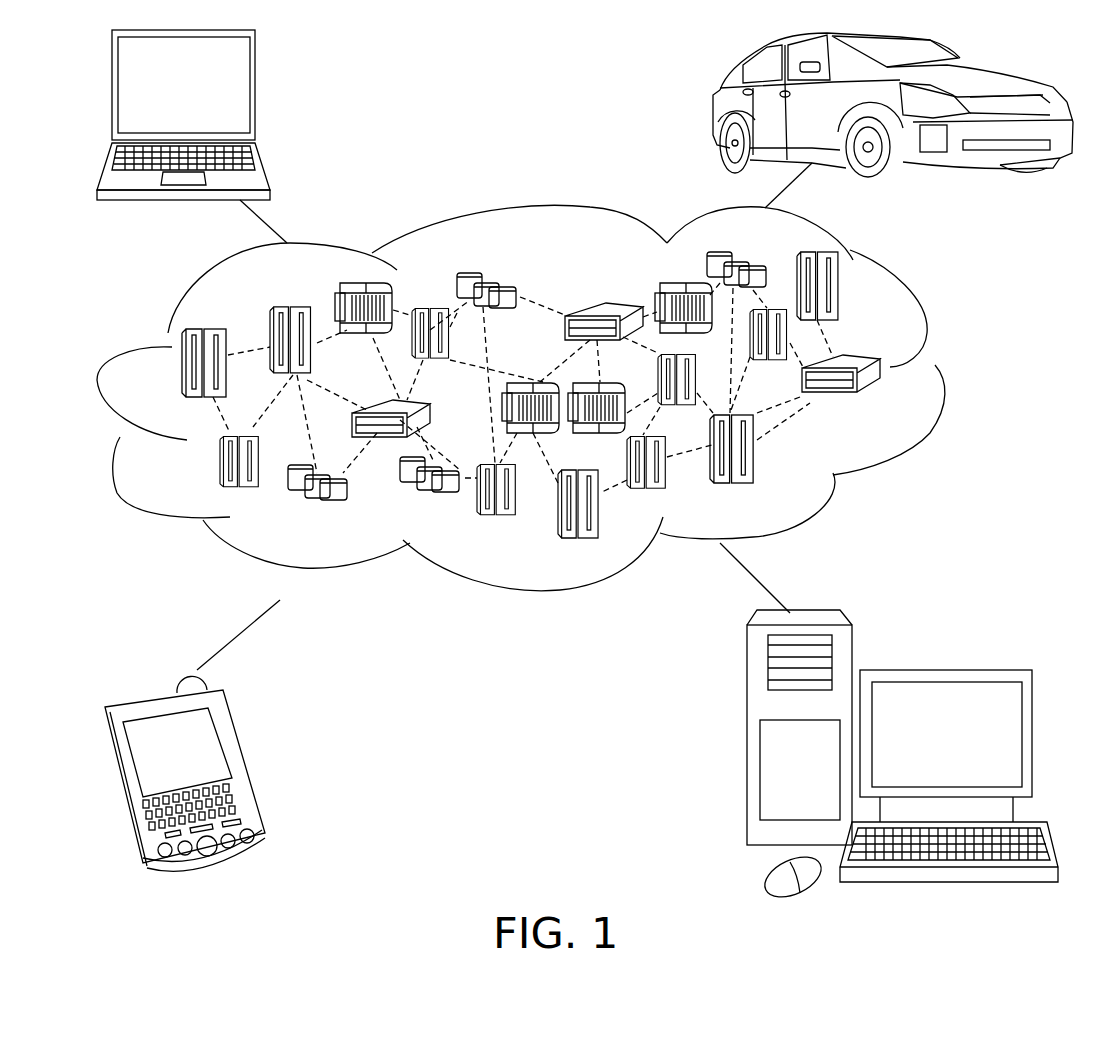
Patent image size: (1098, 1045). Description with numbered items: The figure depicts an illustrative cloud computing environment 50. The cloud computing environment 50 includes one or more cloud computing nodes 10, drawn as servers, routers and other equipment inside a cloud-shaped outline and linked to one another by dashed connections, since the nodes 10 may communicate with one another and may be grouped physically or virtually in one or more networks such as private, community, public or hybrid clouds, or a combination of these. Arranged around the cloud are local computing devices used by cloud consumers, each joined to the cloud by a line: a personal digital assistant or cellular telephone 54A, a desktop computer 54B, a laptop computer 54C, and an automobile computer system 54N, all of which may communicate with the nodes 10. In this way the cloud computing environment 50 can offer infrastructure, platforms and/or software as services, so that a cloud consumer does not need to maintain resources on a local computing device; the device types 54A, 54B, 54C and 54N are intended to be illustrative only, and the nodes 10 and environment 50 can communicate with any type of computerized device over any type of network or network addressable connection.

The cloud computing node 10 is at (885, 403).
The cloud computing environment 50 is at (552, 397).
The personal digital assistant (PDA) or cellular telephone 54A is at (243, 763).
The desktop computer 54B is at (943, 670).
The laptop computer 54C is at (255, 92).
The automobile computer system 54N is at (717, 108).